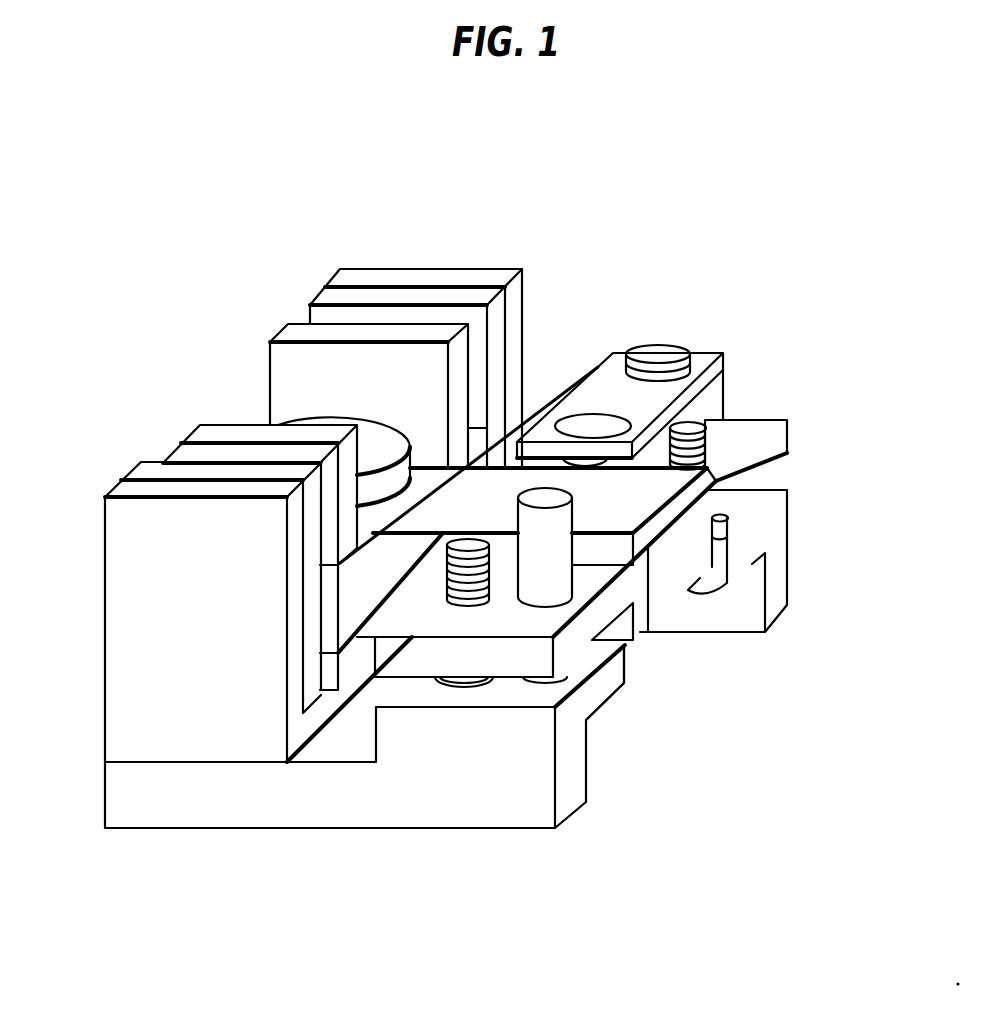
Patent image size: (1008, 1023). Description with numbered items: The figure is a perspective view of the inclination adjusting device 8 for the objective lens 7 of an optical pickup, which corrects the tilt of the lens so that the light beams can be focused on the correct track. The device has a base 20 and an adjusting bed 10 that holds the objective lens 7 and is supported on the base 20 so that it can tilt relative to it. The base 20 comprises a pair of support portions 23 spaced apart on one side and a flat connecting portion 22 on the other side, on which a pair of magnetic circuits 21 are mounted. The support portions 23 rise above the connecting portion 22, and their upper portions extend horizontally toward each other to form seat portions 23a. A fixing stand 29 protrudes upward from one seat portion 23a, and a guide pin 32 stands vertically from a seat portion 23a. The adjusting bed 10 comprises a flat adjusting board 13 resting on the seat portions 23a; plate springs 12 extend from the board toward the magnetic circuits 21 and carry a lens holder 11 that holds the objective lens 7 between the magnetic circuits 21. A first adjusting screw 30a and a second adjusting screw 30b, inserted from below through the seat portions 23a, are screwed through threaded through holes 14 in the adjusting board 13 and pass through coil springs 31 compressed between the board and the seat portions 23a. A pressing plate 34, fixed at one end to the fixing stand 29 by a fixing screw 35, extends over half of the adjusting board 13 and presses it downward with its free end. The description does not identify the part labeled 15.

The objective lens 7 is at (376, 438).
The inclination adjusting device 8 is at (113, 839).
The adjusting bed 10 is at (764, 266).
The lens holder 11 is at (350, 617).
The plate springs 12 is at (483, 483).
The adjusting board 13 is at (790, 437).
The threaded through holes 14 is at (712, 468).
The support bar 15 is at (557, 600).
The base 20 is at (211, 838).
The magnetic circuits 21 is at (326, 296).
The connecting portion 22 is at (278, 802).
The support portions 23 is at (781, 598).
The seat portions 23a is at (746, 556).
The fixing stand 29 is at (718, 385).
The first adjusting screw 30a is at (714, 428).
The second adjusting screw 30b is at (448, 562).
The coil springs 31 is at (728, 518).
The guide pin 32 is at (562, 525).
The pressing plate 34 is at (598, 367).
The fixing screw 35 is at (656, 347).